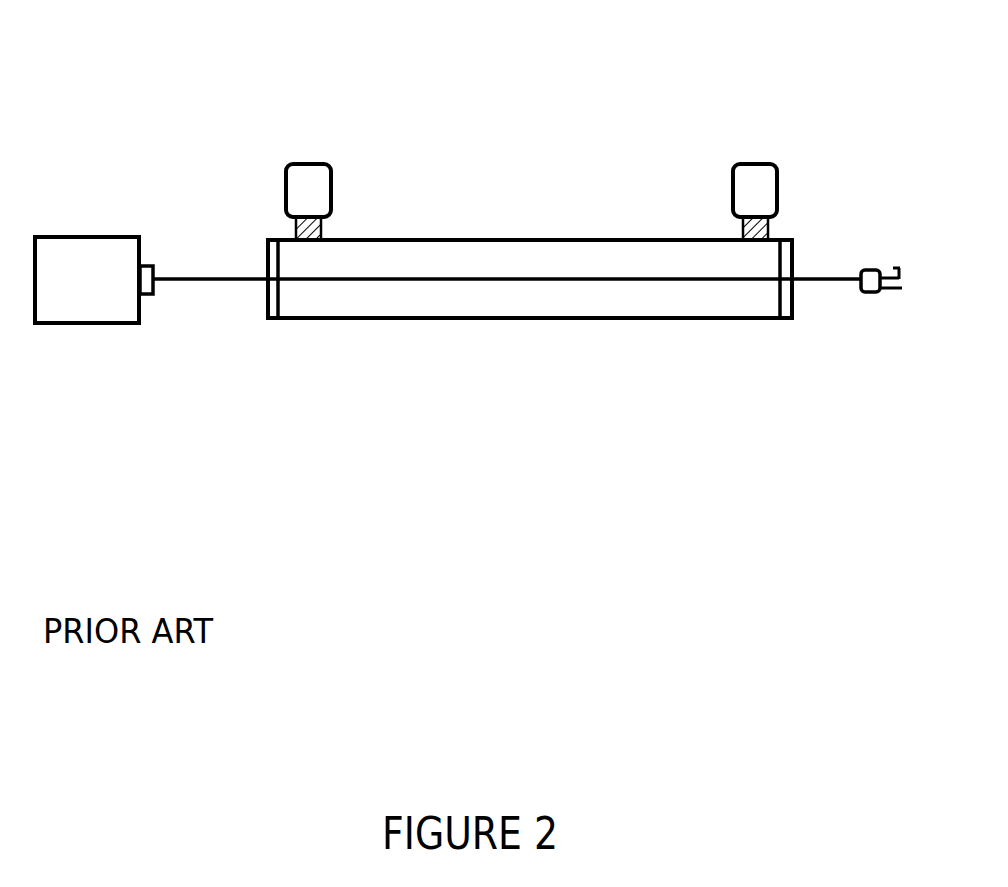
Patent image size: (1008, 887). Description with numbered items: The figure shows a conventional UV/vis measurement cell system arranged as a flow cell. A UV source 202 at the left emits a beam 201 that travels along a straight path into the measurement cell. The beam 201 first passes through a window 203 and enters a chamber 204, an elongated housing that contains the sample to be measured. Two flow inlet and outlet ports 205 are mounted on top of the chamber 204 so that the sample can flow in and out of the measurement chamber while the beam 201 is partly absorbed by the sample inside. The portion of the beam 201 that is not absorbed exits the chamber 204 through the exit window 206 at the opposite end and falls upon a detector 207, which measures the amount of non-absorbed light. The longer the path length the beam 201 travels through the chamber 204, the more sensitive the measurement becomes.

The beam 201 is at (174, 285).
The UV source 202 is at (119, 332).
The window 203 is at (259, 245).
The chamber 204 is at (443, 303).
The flow inlet and outlet ports 205 is at (720, 162).
The exit window 206 is at (783, 318).
The detector 207 is at (867, 255).